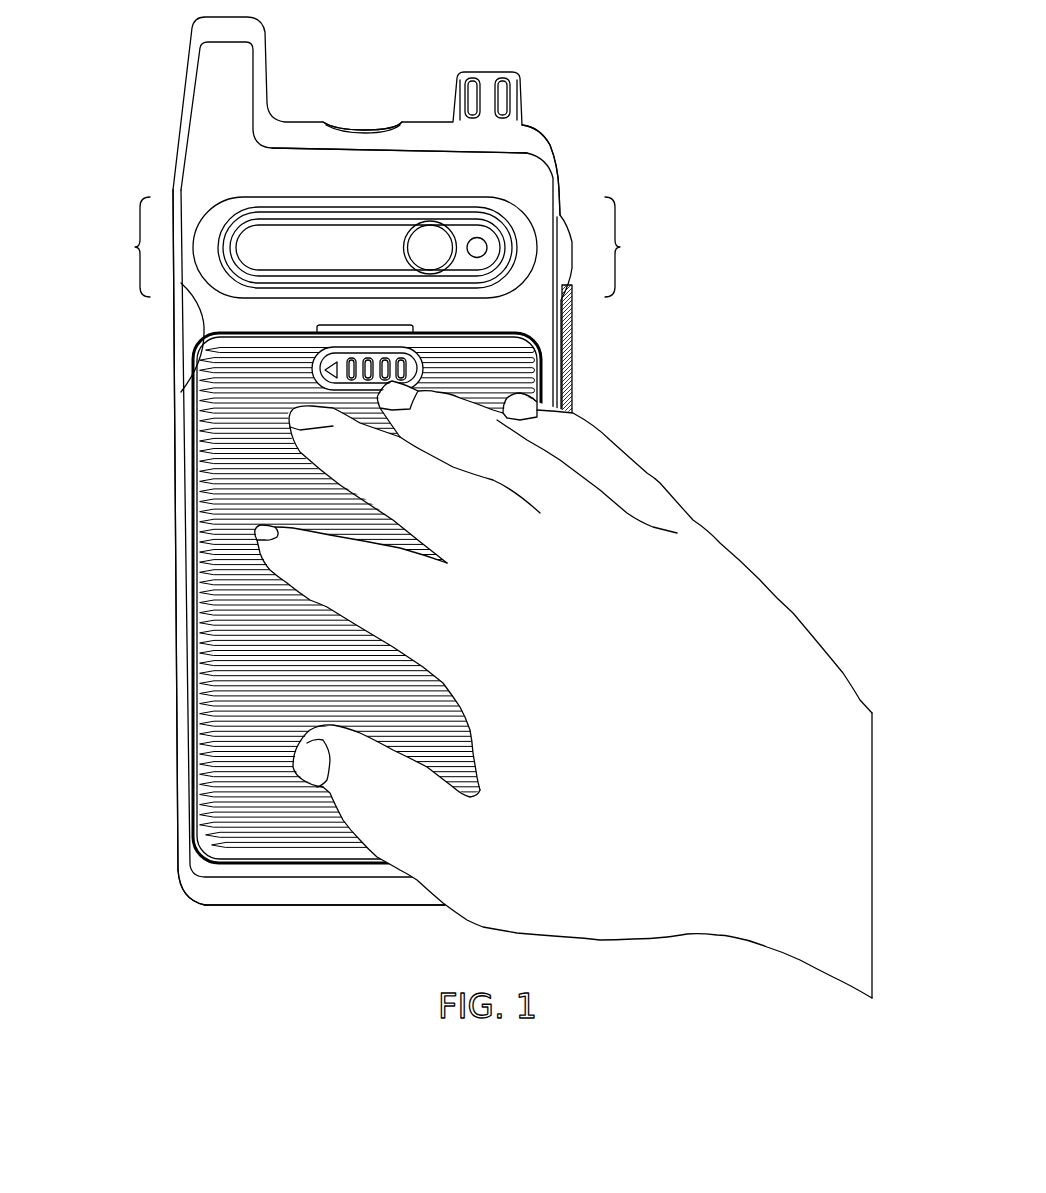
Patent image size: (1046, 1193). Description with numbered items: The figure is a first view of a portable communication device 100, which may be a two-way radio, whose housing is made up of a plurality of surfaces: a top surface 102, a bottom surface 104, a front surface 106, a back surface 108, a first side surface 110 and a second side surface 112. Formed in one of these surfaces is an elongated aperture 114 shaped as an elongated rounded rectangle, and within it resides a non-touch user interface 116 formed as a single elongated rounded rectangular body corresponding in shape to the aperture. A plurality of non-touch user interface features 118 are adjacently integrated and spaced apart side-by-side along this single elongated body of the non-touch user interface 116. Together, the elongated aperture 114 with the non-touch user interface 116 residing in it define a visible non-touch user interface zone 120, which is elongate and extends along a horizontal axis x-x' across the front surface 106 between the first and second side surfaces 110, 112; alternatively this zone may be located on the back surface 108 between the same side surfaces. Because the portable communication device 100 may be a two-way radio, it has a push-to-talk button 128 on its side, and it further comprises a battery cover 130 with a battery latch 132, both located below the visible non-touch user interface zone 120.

The portable communication device 100 is at (758, 95).
The top surface 102 is at (370, 127).
The bottom surface 104 is at (318, 905).
The front surface 106 is at (317, 167).
The back surface 108 is at (177, 853).
The first side surface 110 is at (173, 418).
The second side surface 112 is at (563, 220).
The elongated aperture 114 is at (213, 217).
The non-touch user interface 116 is at (287, 233).
The non-touch user interface features 118 is at (380, 220).
The visible non-touch user interface zone 120 is at (46, 246).
The push-to-talk (PTT) button 128 is at (572, 380).
The battery cover 130 is at (240, 503).
The battery latch 132 is at (317, 373).